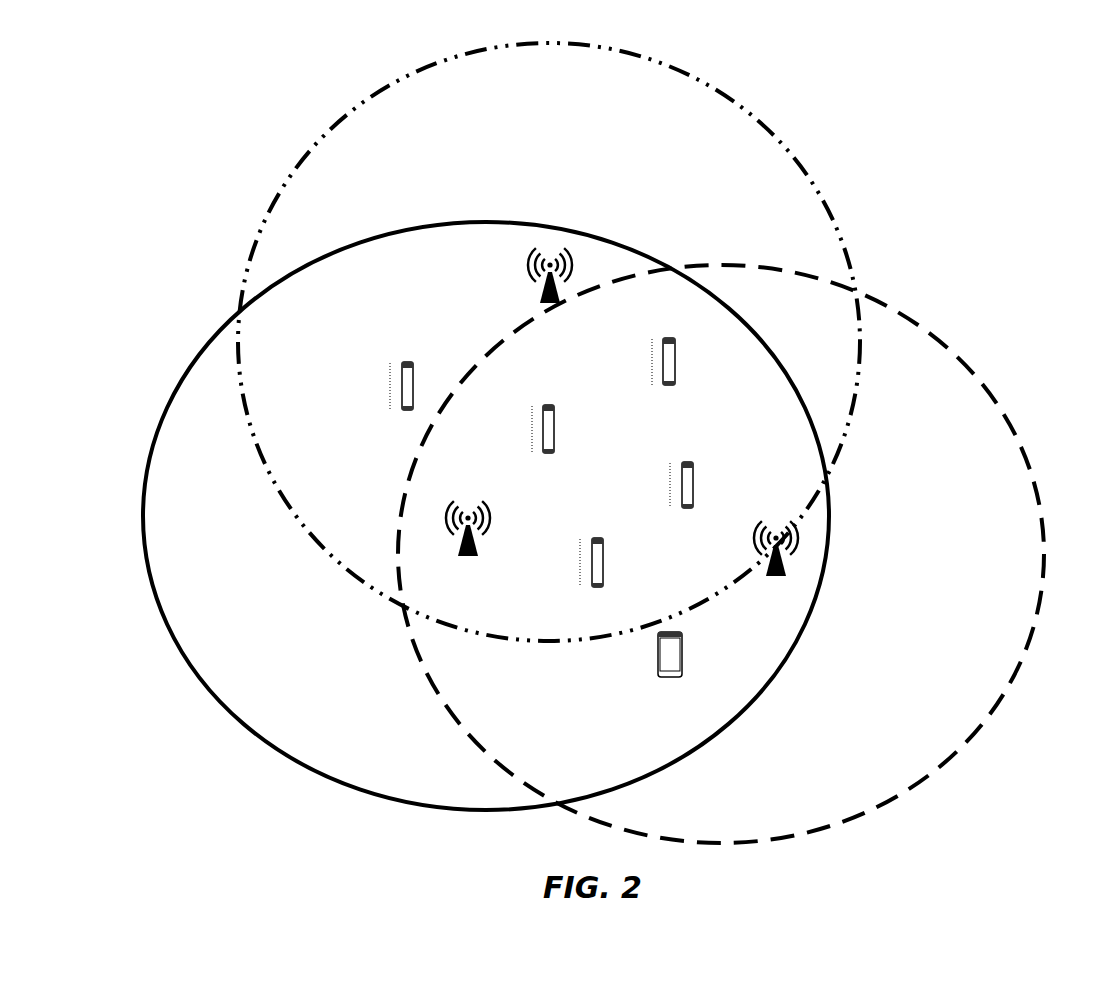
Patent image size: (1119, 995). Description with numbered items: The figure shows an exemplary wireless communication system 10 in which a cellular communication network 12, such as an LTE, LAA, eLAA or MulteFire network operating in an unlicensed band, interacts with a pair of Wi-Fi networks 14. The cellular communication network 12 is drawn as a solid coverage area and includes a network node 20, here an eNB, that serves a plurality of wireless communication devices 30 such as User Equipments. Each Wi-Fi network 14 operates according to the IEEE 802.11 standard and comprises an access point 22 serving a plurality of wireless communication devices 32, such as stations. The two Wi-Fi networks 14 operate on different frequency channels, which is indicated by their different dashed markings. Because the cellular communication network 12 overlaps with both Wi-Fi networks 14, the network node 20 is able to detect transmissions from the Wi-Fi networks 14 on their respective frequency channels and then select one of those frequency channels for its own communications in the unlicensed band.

The wireless communication system 10 is at (945, 115).
The cellular communication network 12 is at (190, 373).
The Wi-Fi network 14 is at (688, 72).
The network node 20 is at (462, 548).
The access point 22 is at (545, 300).
The wireless communication device 30 is at (548, 407).
The wireless communication device 32 is at (402, 363).